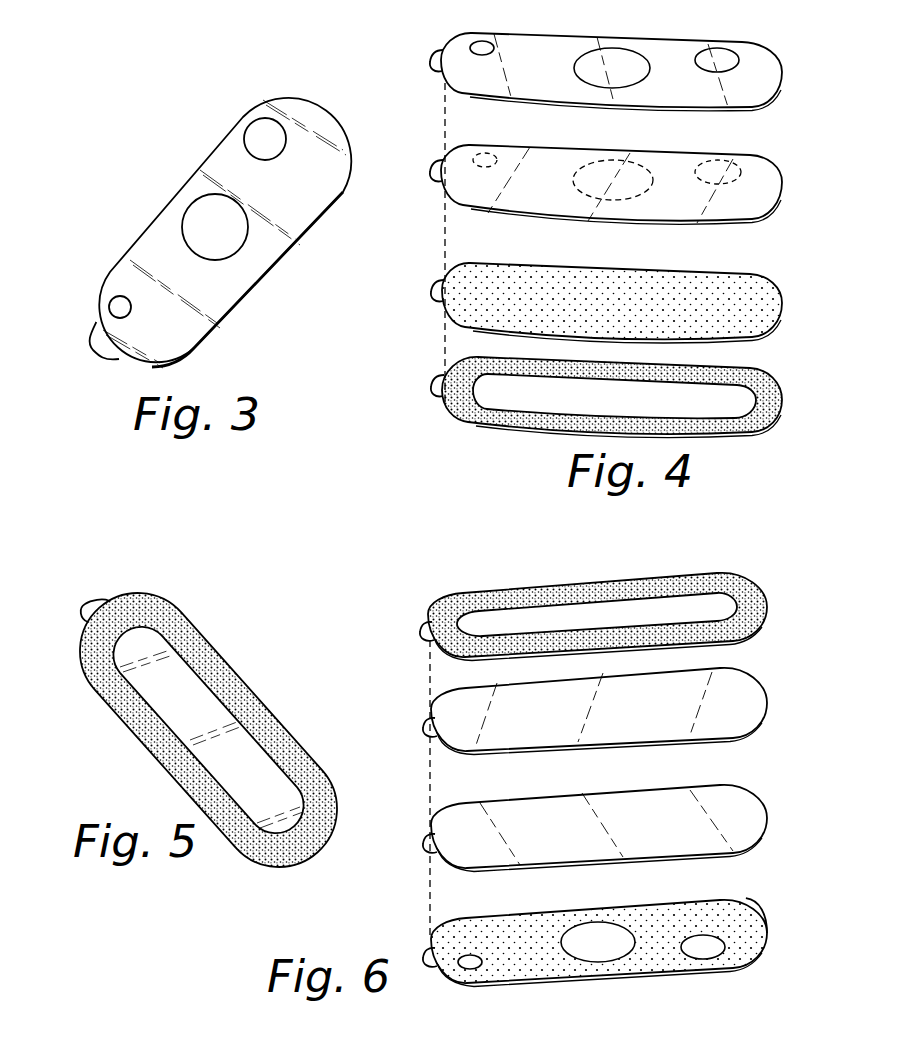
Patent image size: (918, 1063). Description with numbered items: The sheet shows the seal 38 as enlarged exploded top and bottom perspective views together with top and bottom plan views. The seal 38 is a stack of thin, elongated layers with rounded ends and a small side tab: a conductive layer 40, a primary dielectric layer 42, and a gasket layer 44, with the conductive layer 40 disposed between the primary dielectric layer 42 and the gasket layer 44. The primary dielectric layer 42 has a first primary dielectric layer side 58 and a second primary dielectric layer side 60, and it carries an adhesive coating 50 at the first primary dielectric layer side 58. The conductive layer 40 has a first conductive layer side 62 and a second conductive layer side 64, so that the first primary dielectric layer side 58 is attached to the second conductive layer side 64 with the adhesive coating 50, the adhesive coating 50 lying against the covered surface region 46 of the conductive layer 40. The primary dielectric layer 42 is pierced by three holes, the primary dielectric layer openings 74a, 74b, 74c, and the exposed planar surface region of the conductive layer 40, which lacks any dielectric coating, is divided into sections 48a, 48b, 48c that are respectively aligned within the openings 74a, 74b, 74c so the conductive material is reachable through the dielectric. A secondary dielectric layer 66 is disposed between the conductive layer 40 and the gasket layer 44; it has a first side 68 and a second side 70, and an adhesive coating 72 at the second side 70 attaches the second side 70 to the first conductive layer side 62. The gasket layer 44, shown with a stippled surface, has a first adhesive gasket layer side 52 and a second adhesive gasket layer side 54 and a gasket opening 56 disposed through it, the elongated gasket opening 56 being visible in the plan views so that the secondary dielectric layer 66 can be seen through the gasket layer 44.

In FIG. 3, the seal 38 is at (153, 132).
In FIG. 4, the seal 38 is at (412, 253).
In FIG. 5, the seal 38 is at (170, 573).
In FIG. 6, the seal 38 is at (383, 652).
In FIG. 4, the conductive layer 40 is at (762, 168).
In FIG. 6, the conductive layer 40 is at (750, 803).
In FIG. 3, the primary dielectric layer 42 is at (327, 121).
In FIG. 4, the primary dielectric layer 42 is at (758, 55).
In FIG. 6, the primary dielectric layer 42 is at (747, 915).
In FIG. 4, the gasket layer 44 is at (771, 387).
In FIG. 5, the gasket layer 44 is at (318, 838).
In FIG. 6, the gasket layer 44 is at (748, 593).
In FIG. 4, the covered surface region 46 is at (462, 188).
In FIG. 6, the covered surface region 46 is at (452, 871).
In FIG. 3, the section of exposed planar surface region 48a is at (109, 308).
In FIG. 4, the section of exposed planar surface region 48a is at (485, 154).
In FIG. 3, the section of exposed planar surface region 48b is at (204, 257).
In FIG. 4, the section of exposed planar surface region 48b is at (600, 166).
In FIG. 3, the section of exposed planar surface region 48c is at (265, 160).
In FIG. 4, the section of exposed planar surface region 48c is at (710, 166).
In FIG. 4, the adhesive coating 50 is at (462, 97).
In FIG. 6, the adhesive coating 50 is at (508, 920).
In FIG. 4, the first adhesive gasket layer side 52 is at (743, 441).
In FIG. 5, the first adhesive gasket layer side 52 is at (226, 675).
In FIG. 6, the first adhesive gasket layer side 52 is at (763, 613).
In FIG. 4, the second adhesive gasket layer side 54 is at (774, 423).
In FIG. 6, the second adhesive gasket layer side 54 is at (748, 644).
In FIG. 4, the gasket opening 56 is at (507, 397).
In FIG. 6, the gasket opening 56 is at (483, 617).
In FIG. 4, the first primary dielectric layer side 58 is at (747, 110).
In FIG. 6, the first primary dielectric layer side 58 is at (757, 940).
In FIG. 3, the second primary dielectric layer side 60 is at (344, 178).
In FIG. 4, the second primary dielectric layer side 60 is at (767, 76).
In FIG. 6, the second primary dielectric layer side 60 is at (748, 968).
In FIG. 4, the first conductive layer side 62 is at (748, 223).
In FIG. 6, the first conductive layer side 62 is at (760, 827).
In FIG. 4, the second conductive layer side 64 is at (767, 194).
In FIG. 6, the second conductive layer side 64 is at (748, 856).
In FIG. 4, the secondary dielectric layer 66 is at (758, 292).
In FIG. 5, the secondary dielectric layer 66 is at (182, 679).
In FIG. 6, the secondary dielectric layer 66 is at (750, 692).
In FIG. 4, the first side of secondary dielectric layer 68 is at (753, 341).
In FIG. 6, the first side of secondary dielectric layer 68 is at (753, 713).
In FIG. 4, the second side of secondary dielectric layer 70 is at (767, 312).
In FIG. 6, the second side of secondary dielectric layer 70 is at (748, 738).
In FIG. 4, the adhesive coating 72 is at (462, 307).
In FIG. 6, the adhesive coating 72 is at (452, 751).
In FIG. 3, the primary dielectric layer opening 74a is at (108, 297).
In FIG. 4, the primary dielectric layer opening 74a is at (478, 46).
In FIG. 6, the primary dielectric layer opening 74a is at (467, 968).
In FIG. 3, the primary dielectric layer opening 74b is at (187, 217).
In FIG. 4, the primary dielectric layer opening 74b is at (606, 47).
In FIG. 6, the primary dielectric layer opening 74b is at (603, 955).
In FIG. 3, the primary dielectric layer opening 74c is at (247, 123).
In FIG. 4, the primary dielectric layer opening 74c is at (718, 50).
In FIG. 6, the primary dielectric layer opening 74c is at (707, 953).